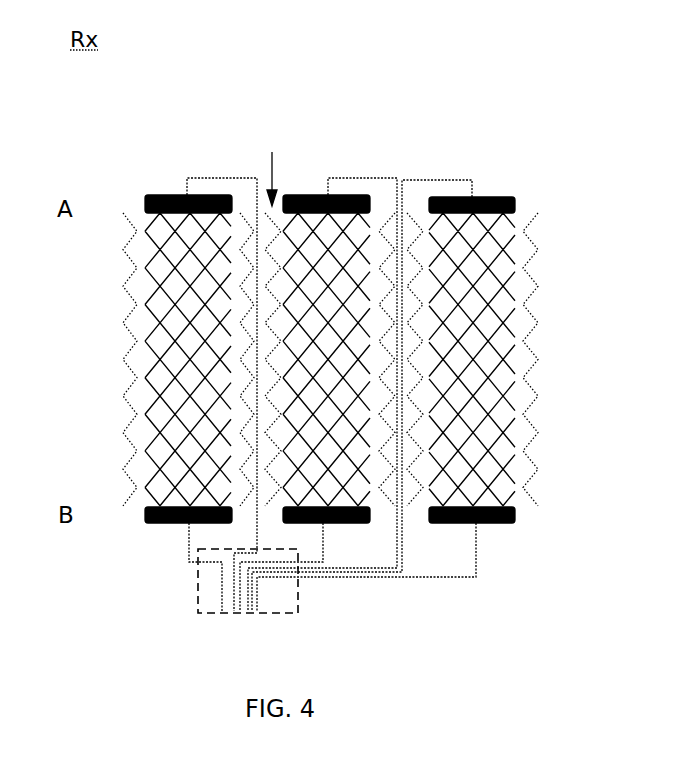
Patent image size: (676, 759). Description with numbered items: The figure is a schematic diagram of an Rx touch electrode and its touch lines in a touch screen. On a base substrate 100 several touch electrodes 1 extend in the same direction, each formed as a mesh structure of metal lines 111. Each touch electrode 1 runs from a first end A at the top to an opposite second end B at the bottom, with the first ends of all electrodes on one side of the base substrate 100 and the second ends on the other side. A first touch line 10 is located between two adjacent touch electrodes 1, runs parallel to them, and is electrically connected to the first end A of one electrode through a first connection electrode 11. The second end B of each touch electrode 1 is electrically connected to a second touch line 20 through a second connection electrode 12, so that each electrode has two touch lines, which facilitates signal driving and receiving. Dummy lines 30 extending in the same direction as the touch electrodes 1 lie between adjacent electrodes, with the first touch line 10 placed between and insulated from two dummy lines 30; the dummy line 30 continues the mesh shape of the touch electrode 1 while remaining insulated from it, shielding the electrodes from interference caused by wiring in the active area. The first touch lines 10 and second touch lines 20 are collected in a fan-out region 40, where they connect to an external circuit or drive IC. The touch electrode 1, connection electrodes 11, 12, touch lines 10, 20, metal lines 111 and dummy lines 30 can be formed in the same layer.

The touch electrode 1 is at (152, 374).
The first touch line 10 is at (222, 386).
The first connection electrode 11 is at (157, 195).
The second connection electrode 12 is at (163, 523).
The second touch line 20 is at (205, 567).
The dummy line 30 is at (271, 170).
The fan-out region 40 is at (275, 613).
The base substrate 100 is at (442, 143).
The metal line 111 is at (150, 495).